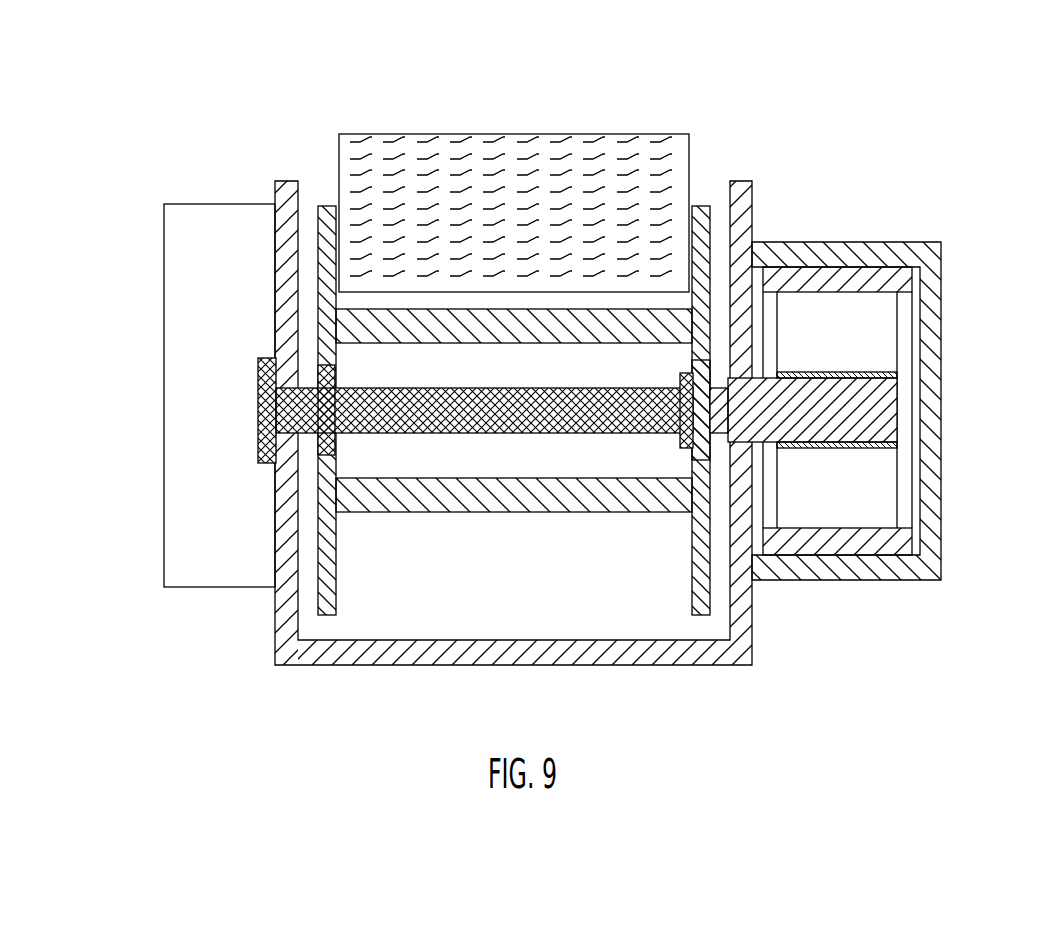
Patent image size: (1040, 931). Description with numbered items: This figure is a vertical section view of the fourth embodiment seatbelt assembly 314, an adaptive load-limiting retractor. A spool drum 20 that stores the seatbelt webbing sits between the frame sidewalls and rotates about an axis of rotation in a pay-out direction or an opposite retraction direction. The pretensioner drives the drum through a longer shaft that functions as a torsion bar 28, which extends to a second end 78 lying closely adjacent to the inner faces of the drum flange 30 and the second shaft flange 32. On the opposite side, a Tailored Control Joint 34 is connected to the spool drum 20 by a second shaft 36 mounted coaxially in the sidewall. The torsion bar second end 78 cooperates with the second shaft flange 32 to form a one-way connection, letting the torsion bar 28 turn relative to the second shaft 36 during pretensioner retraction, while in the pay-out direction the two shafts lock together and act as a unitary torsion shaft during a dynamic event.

The spool drum 20 is at (336, 585).
The torsion bar 28 is at (440, 435).
The spool drum flange 30 is at (693, 468).
The second shaft flange 32 is at (693, 372).
The Tailored Control Joint 34 is at (946, 280).
The second shaft 36 is at (897, 412).
The torsion bar second end 78 is at (680, 440).
The seatbelt assembly 314 is at (931, 109).